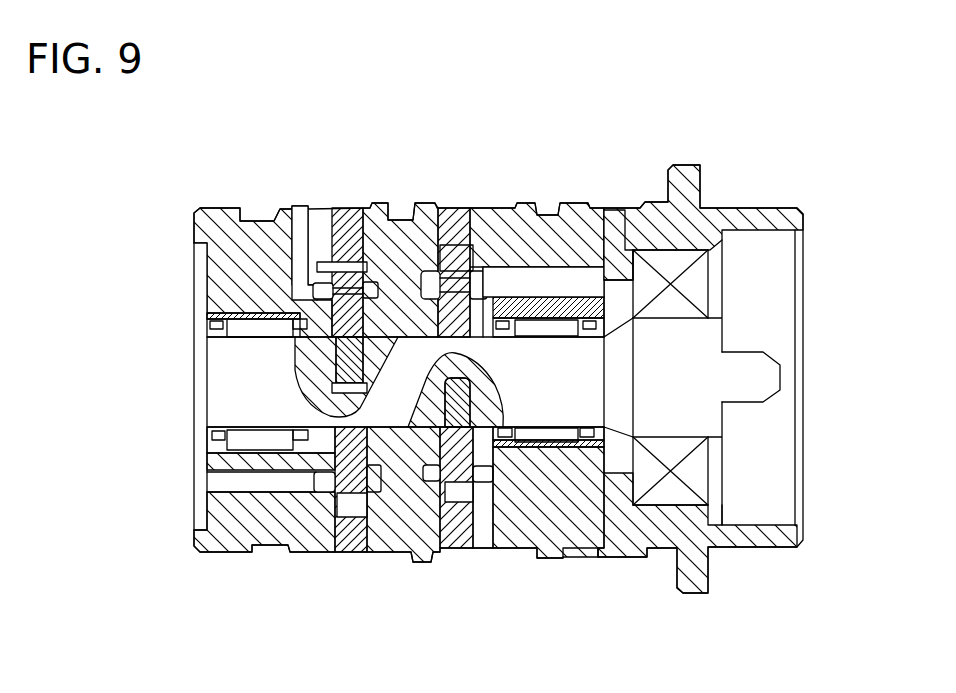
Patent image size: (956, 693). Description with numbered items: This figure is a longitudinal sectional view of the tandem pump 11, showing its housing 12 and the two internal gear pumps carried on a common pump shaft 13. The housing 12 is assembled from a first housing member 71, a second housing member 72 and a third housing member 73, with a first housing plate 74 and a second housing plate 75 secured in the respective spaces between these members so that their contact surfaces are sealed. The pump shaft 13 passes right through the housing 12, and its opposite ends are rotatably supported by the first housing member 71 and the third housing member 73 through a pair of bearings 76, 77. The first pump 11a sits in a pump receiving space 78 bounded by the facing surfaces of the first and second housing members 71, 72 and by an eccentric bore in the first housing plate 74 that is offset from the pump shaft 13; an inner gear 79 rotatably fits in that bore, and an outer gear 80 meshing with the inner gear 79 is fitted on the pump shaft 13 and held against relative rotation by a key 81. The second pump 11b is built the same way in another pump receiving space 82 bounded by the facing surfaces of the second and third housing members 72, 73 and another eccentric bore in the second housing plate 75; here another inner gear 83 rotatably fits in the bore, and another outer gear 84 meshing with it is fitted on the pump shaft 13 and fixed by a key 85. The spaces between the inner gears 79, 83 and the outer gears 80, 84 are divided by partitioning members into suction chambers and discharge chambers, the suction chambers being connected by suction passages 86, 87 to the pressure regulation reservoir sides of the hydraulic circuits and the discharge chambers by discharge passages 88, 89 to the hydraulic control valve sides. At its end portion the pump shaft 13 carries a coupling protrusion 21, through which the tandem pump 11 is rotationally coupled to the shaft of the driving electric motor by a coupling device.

The tandem pump 11 is at (188, 210).
The first pump 11a is at (432, 445).
The second pump 11b is at (322, 458).
The housing 12 is at (502, 205).
The pump shaft 13 is at (240, 382).
The coupling protrusion 21 is at (752, 378).
The first housing member 71 is at (680, 207).
The second housing member 72 is at (378, 208).
The third housing member 73 is at (225, 209).
The first housing plate 74 is at (457, 208).
The second housing plate 75 is at (345, 207).
The bearing 76 is at (565, 500).
The bearing 77 is at (265, 437).
The pump receiving space 78 is at (436, 250).
The inner gear 79 is at (462, 490).
The outer gear 80 is at (465, 415).
The key 81 is at (553, 440).
The pump receiving space 82 is at (322, 258).
The inner gear 83 is at (350, 503).
The outer gear 84 is at (333, 305).
The key 85 is at (340, 352).
The suction passage 86 is at (532, 278).
The suction passage 87 is at (238, 483).
The discharge passage 88 is at (507, 468).
The discharge passage 89 is at (293, 208).